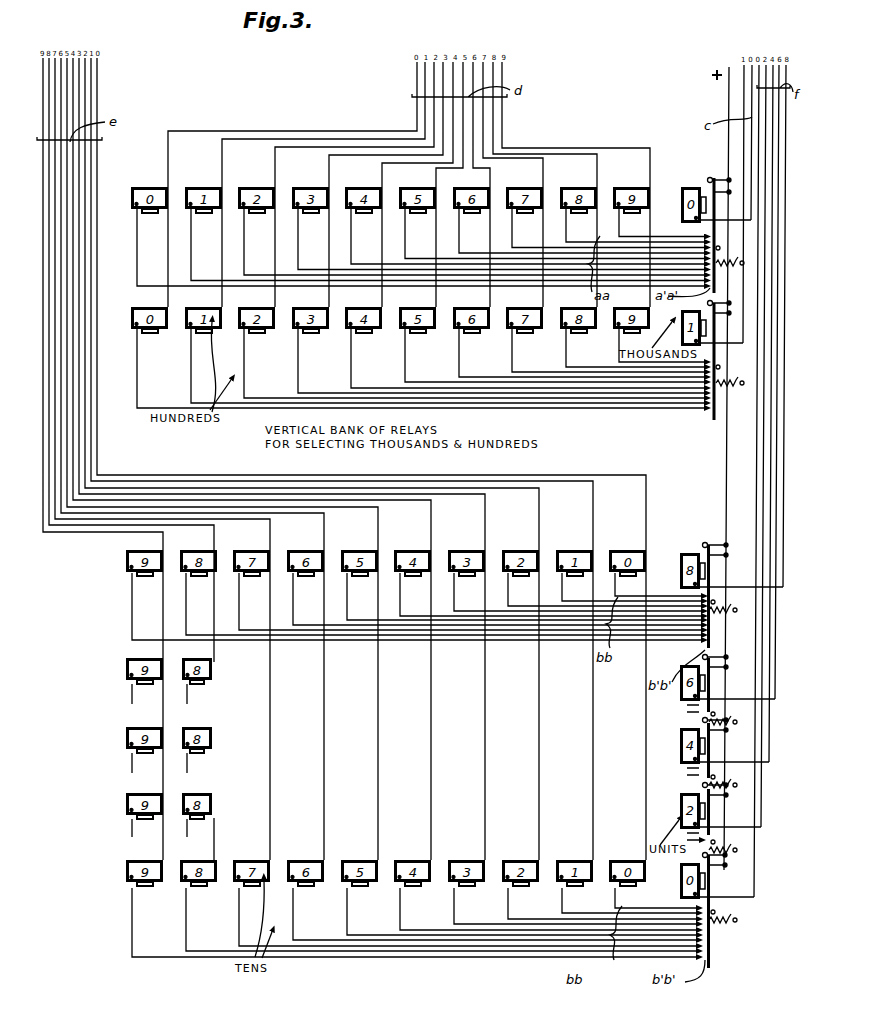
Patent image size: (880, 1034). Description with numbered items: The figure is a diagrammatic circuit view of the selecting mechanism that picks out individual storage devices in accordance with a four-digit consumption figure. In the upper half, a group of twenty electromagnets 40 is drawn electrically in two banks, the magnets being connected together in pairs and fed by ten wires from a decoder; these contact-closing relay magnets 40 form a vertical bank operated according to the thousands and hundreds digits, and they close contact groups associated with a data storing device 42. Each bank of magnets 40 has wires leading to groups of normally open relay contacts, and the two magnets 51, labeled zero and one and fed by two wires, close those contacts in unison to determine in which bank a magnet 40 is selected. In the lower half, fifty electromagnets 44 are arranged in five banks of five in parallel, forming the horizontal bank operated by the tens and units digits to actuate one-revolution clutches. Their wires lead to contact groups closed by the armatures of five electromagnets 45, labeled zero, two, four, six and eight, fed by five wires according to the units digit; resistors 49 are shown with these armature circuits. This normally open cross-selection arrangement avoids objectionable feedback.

The electromagnet 40 is at (357, 186).
The electromagnet 51 is at (681, 208).
The resistor 49 is at (723, 614).
The data storing device 42 is at (458, 677).
The electromagnet 44 is at (558, 552).
The electromagnet 45 is at (685, 553).